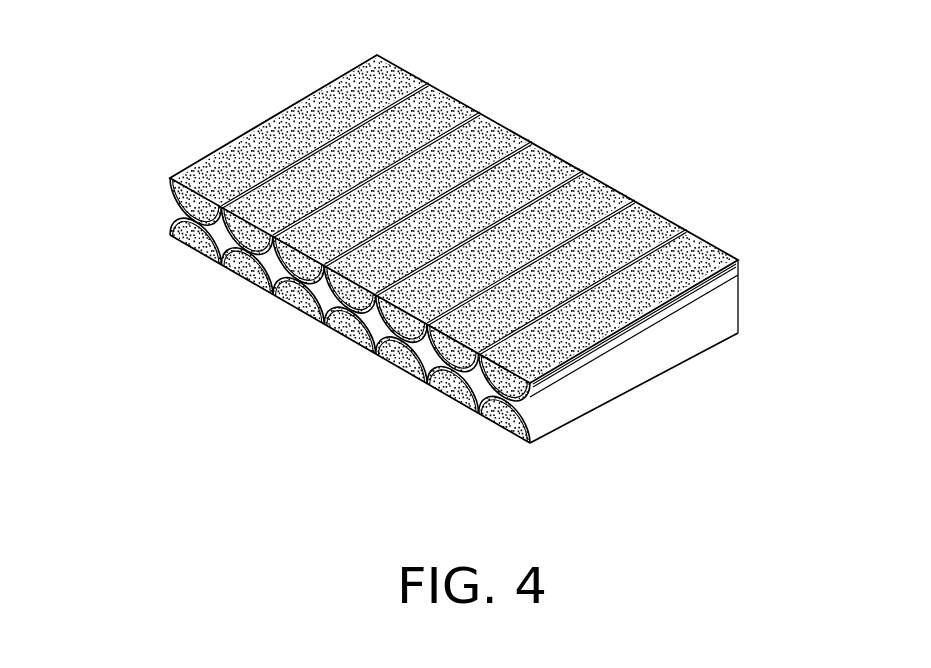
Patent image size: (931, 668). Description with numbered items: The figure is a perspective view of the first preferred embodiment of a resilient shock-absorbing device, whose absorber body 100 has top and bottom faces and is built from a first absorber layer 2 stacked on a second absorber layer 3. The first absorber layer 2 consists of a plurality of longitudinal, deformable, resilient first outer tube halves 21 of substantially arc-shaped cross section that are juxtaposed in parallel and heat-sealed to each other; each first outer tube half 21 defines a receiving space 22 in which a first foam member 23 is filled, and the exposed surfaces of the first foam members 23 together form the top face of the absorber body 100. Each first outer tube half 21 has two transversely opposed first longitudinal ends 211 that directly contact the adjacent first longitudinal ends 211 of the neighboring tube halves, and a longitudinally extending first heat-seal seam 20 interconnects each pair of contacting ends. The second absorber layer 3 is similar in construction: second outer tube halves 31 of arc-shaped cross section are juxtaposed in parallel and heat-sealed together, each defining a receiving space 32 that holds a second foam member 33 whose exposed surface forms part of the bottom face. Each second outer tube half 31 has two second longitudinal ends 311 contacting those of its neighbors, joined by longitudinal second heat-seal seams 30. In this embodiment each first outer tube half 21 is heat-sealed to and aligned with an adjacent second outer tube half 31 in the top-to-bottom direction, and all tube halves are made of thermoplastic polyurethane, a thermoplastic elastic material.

The absorber body 100 is at (435, 260).
The first absorber layer 2 is at (435, 202).
The first heat-seal seam 20 is at (528, 142).
The first outer tube half 21 is at (167, 198).
The first longitudinal end 211 is at (443, 133).
The receiving space 22 is at (170, 180).
The first foam member 23 is at (203, 172).
The second absorber layer 3 is at (411, 362).
The second heat-seal seam 30 is at (318, 320).
The second outer tube half 31 is at (167, 228).
The receiving space 32 is at (182, 243).
The second foam member 33 is at (197, 250).
The second longitudinal end 311 is at (507, 423).